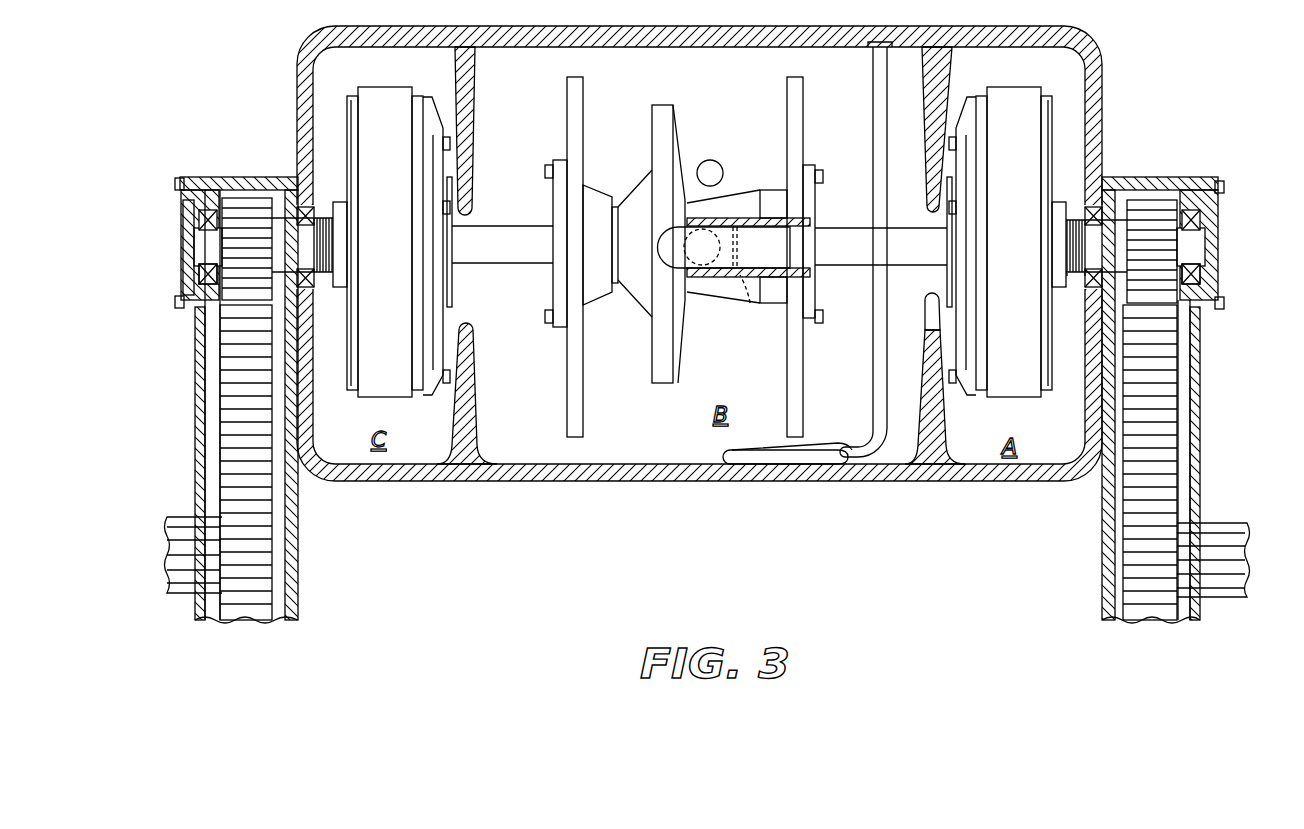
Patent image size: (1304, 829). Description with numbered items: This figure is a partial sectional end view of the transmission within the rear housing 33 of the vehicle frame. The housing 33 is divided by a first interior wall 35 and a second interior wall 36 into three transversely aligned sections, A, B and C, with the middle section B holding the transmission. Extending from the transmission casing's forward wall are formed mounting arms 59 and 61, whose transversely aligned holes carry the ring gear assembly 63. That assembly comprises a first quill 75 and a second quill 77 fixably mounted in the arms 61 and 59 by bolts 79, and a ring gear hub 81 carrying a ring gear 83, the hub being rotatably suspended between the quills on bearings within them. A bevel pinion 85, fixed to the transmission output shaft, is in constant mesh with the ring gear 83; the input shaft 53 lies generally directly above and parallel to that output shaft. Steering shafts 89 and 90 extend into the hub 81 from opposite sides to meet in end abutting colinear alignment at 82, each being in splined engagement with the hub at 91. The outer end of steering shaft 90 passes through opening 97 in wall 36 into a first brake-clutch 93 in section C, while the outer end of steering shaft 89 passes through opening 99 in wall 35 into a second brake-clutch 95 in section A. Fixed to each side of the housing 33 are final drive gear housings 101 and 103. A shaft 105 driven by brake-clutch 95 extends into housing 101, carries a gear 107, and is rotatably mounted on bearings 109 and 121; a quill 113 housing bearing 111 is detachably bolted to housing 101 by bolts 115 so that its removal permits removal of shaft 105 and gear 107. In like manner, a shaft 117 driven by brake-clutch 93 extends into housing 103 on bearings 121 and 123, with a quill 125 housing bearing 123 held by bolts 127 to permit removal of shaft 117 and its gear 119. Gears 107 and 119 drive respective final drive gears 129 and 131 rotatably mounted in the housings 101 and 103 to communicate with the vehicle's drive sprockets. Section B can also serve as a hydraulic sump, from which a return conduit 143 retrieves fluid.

The housing 33 is at (1103, 75).
The first interior wall 35 is at (932, 368).
The second interior wall 36 is at (479, 407).
The input shaft 53 is at (716, 163).
The mounting arm 59 is at (805, 98).
The mounting arm 61 is at (583, 97).
The ring gear assembly 63 is at (718, 86).
The first quill 75 is at (555, 211).
The second quill 77 is at (812, 204).
The bolts 79 is at (546, 174).
The ring gear hub 81 is at (712, 208).
The end abutting colinear alignment 82 is at (748, 304).
The ring gear 83 is at (653, 131).
The bevel pinion 85 is at (738, 236).
The steering shaft 89 is at (896, 238).
The steering shaft 90 is at (530, 265).
The splined engagement 91 is at (730, 272).
The first brake-clutch 93 is at (415, 80).
The second brake-clutch 95 is at (1045, 80).
The opening 97 is at (474, 315).
The opening 99 is at (928, 300).
The final drive gear housing 101 is at (1126, 178).
The final drive gear housing 103 is at (278, 178).
The shaft 105 is at (1067, 212).
The gear 107 is at (1150, 200).
The bearing 109 is at (1072, 282).
The bearing 111 is at (1220, 268).
The quill 113 is at (1222, 242).
The bolts 115 is at (1224, 186).
The shaft 117 is at (318, 218).
The gear 119 is at (232, 208).
The bearing 121 is at (308, 282).
The bearing 123 is at (197, 272).
The quill 125 is at (182, 211).
The bolts 127 is at (172, 183).
The final drive gear 129 is at (1182, 400).
The final drive gear 131 is at (225, 383).
The return conduit 143 is at (873, 397).